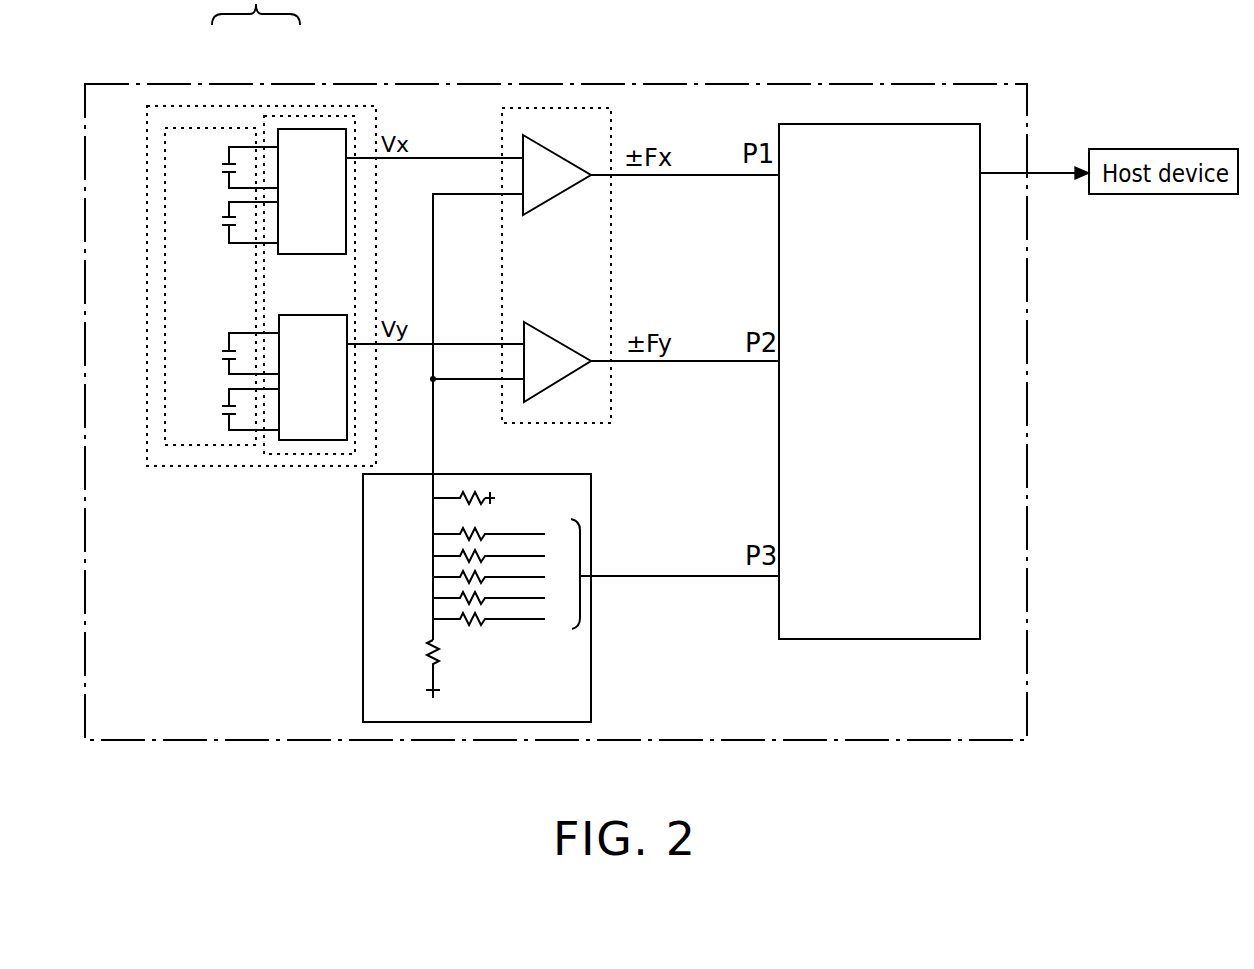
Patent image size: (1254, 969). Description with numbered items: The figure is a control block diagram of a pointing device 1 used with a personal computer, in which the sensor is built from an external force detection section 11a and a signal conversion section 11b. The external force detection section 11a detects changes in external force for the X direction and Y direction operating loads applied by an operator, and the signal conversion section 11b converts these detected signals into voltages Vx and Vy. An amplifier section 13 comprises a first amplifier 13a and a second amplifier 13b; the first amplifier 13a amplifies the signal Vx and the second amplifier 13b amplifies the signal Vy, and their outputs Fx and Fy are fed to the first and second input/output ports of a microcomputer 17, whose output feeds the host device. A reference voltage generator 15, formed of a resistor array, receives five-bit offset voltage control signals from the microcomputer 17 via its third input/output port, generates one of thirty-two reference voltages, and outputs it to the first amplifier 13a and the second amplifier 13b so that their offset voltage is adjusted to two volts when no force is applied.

The coordinate input device 1 is at (965, 84).
The external force detection section 11a is at (232, 128).
The signal conversion section 11b is at (300, 116).
The amplifier section 13 is at (556, 227).
The first amplifier 13a is at (551, 192).
The second amplifier 13b is at (555, 343).
The reference voltage generator 15 is at (583, 496).
The microcomputer 17 is at (878, 124).